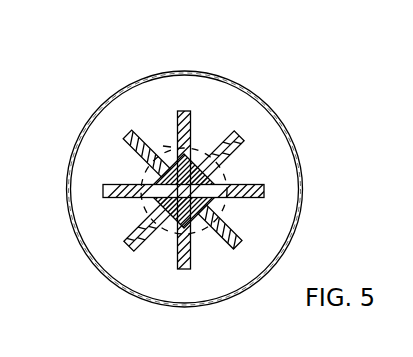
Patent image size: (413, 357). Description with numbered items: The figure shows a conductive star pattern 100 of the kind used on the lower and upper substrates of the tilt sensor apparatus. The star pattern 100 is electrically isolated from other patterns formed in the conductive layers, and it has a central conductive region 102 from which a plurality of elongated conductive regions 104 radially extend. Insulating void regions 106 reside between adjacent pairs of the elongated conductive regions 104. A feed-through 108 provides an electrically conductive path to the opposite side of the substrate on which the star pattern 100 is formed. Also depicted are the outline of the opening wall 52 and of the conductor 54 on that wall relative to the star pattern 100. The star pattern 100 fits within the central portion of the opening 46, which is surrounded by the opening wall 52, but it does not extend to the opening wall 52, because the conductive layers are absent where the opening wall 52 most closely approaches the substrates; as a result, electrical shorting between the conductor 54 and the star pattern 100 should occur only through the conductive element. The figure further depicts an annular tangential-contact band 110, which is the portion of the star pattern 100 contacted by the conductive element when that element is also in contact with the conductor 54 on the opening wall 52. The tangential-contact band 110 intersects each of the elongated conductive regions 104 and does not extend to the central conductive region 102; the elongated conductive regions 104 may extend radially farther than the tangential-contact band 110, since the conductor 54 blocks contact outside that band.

The opening 46 is at (71, 159).
The opening wall 52 is at (92, 121).
The conductor 54 is at (113, 96).
The conductive star pattern 100 is at (175, 182).
The central conductive region 102 is at (222, 166).
The elongated conductive regions 104 is at (223, 139).
The insulating void regions 106 is at (191, 118).
The feed-through 108 is at (226, 202).
The tangential-contact band 110 is at (170, 147).